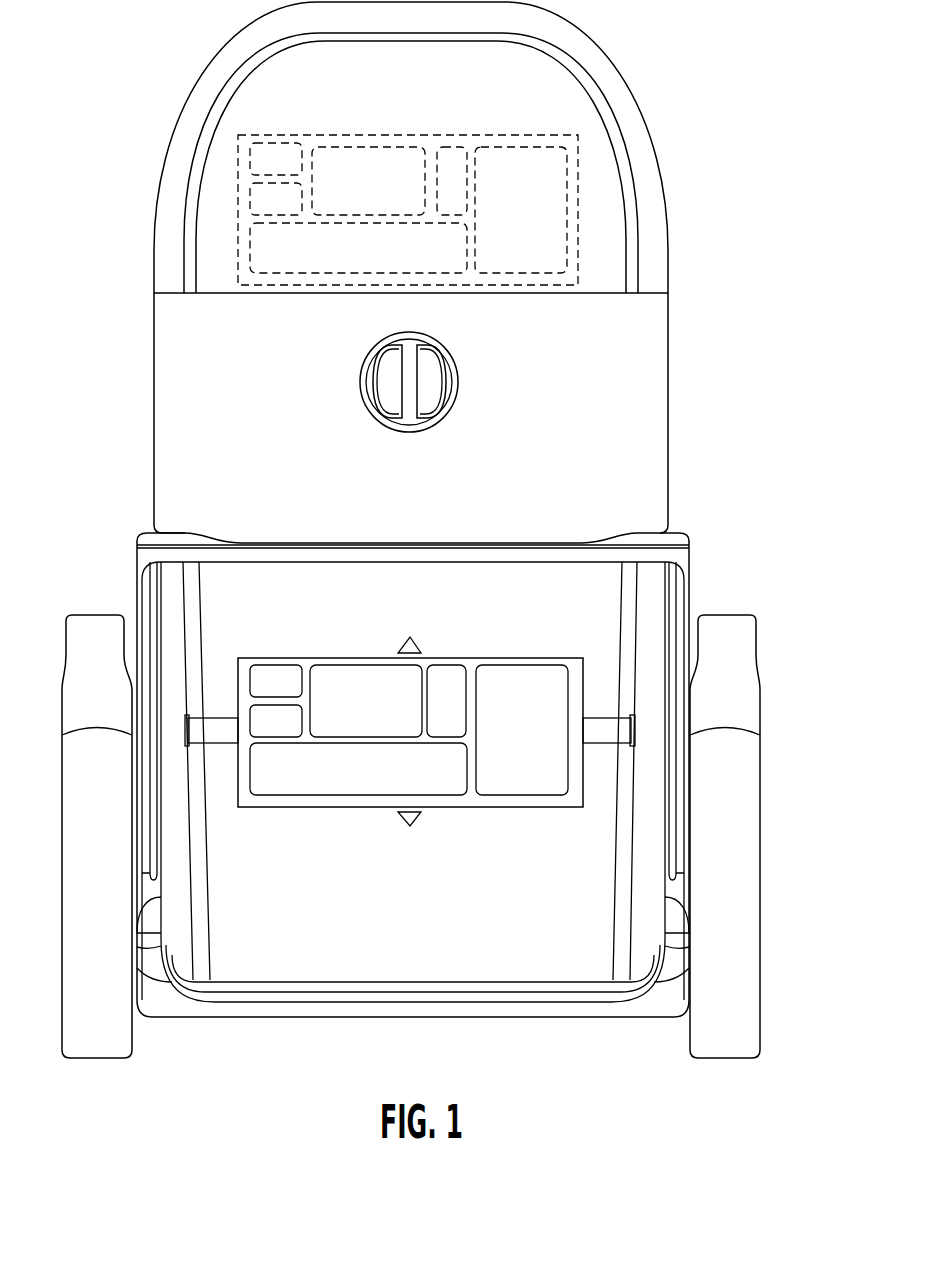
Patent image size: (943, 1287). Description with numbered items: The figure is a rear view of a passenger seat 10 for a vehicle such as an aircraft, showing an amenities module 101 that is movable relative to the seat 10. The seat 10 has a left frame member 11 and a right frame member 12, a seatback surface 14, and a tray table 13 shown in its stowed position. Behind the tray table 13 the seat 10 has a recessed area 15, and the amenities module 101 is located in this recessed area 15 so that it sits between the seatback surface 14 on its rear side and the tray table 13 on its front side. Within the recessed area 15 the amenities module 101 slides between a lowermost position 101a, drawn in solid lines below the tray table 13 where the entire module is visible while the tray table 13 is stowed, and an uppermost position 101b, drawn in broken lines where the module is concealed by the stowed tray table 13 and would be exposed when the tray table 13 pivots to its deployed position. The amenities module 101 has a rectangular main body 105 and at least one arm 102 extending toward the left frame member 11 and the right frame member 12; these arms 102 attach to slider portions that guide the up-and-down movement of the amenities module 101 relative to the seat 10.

The passenger seat 10 is at (722, 52).
The left frame member 11 is at (170, 247).
The right frame member 12 is at (647, 255).
The tray table 13 is at (274, 450).
The seatback surface 14 is at (537, 78).
The recessed area 15 is at (350, 630).
The amenities module 101 is at (550, 768).
The lowermost position 101a is at (449, 778).
The uppermost position 101b is at (367, 178).
The arm 102 is at (213, 733).
The main body 105 is at (552, 692).